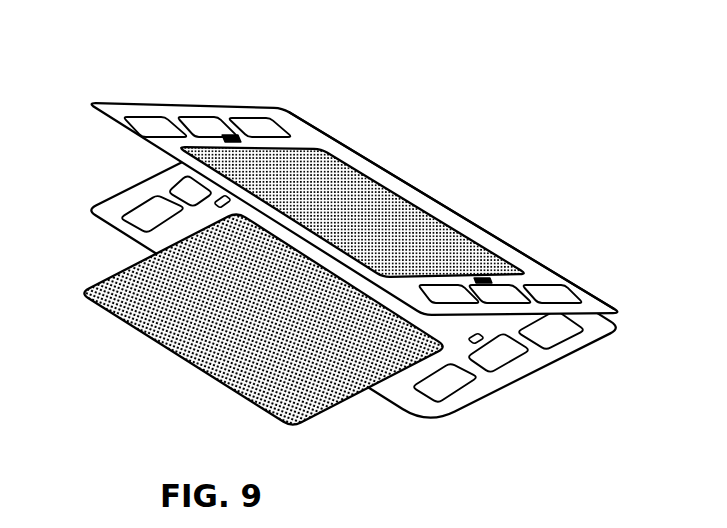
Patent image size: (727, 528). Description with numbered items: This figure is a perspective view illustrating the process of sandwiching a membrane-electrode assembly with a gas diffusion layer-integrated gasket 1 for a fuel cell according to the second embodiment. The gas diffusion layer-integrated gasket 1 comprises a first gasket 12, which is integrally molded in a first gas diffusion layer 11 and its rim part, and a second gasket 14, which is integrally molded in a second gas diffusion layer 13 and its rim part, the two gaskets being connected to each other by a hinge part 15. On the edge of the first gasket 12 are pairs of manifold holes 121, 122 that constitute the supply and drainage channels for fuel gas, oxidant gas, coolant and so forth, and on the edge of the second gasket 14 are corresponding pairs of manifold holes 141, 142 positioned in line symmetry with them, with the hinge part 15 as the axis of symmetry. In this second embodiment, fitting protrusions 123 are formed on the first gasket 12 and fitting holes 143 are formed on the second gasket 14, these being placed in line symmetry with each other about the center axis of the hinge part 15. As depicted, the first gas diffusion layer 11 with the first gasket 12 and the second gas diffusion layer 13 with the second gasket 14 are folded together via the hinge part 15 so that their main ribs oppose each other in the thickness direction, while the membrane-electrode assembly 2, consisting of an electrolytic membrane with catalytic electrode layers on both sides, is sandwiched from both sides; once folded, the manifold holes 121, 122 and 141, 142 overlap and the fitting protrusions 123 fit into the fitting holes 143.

The gas diffusion layer-integrated gasket 1 is at (325, 258).
The membrane-electrode assembly 2 is at (203, 352).
The first gas diffusion layer 11 is at (325, 258).
The first gasket 12 is at (310, 315).
The second gas diffusion layer 13 is at (355, 198).
The second gasket 14 is at (355, 158).
The hinge part 15 is at (452, 205).
The manifold hole 121 is at (142, 222).
The manifold hole 122 is at (406, 412).
The fitting protrusion 123 is at (212, 192).
The manifold hole 141 is at (150, 125).
The manifold hole 142 is at (438, 292).
The fitting hole 143 is at (231, 134).